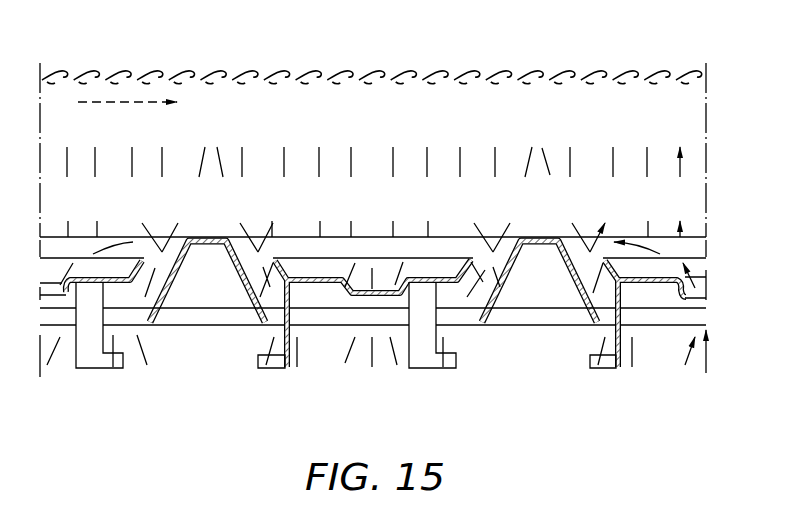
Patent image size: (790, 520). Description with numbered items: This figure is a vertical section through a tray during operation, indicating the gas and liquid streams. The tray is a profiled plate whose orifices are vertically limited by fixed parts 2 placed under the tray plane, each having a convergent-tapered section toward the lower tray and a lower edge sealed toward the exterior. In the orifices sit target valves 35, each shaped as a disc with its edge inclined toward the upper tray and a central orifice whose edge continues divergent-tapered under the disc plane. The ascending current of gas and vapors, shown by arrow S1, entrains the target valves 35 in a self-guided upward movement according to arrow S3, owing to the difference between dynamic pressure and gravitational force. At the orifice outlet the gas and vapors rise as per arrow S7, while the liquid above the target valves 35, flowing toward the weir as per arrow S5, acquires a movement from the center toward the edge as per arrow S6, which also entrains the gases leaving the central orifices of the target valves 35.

The fixed parts 2 is at (165, 290).
The target valve 35 is at (342, 283).
The ascendent current of gas and vapors S1 is at (468, 338).
The self-guided ascendent movement of target valves S3 is at (365, 237).
The liquid flow toward the weir S5 is at (128, 103).
The movement from center toward edge S6 is at (447, 237).
The ascending movement of gas and vapors at orifice outlet S7 is at (173, 240).